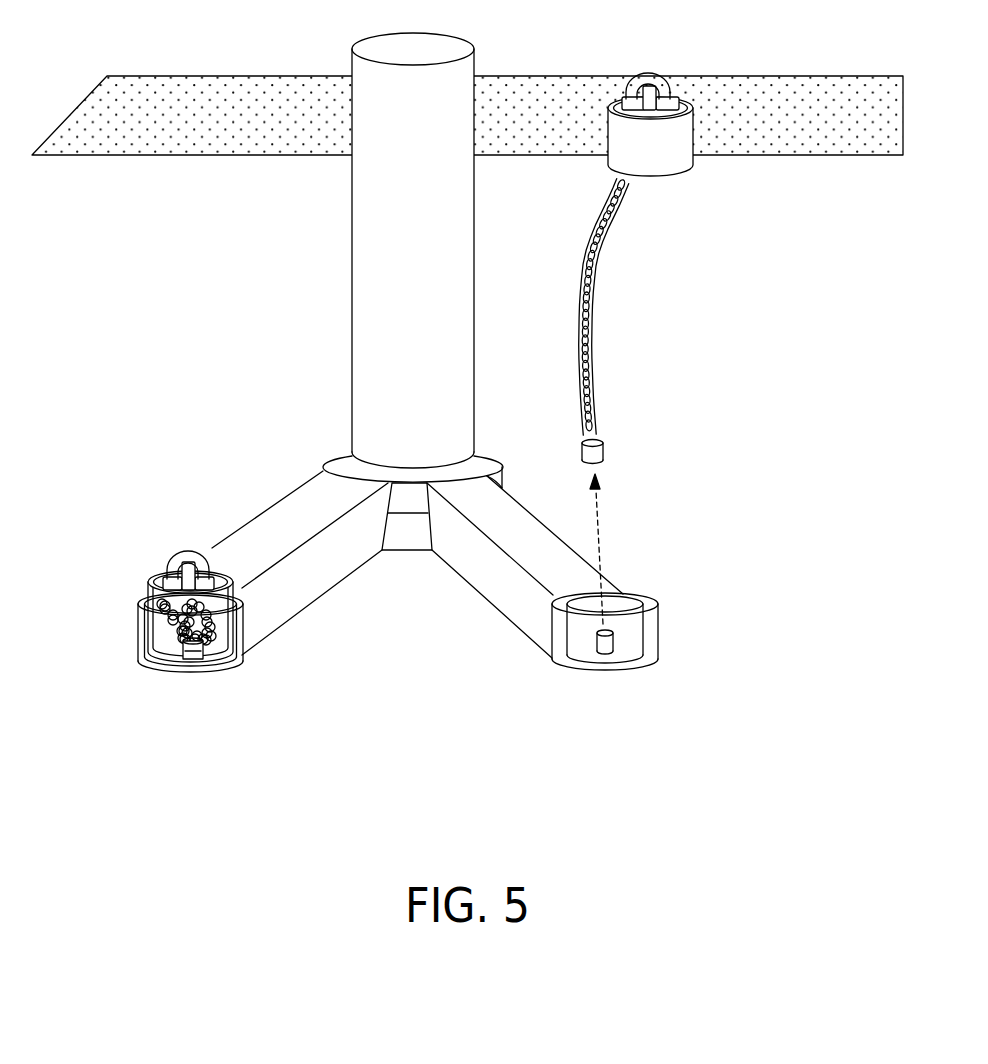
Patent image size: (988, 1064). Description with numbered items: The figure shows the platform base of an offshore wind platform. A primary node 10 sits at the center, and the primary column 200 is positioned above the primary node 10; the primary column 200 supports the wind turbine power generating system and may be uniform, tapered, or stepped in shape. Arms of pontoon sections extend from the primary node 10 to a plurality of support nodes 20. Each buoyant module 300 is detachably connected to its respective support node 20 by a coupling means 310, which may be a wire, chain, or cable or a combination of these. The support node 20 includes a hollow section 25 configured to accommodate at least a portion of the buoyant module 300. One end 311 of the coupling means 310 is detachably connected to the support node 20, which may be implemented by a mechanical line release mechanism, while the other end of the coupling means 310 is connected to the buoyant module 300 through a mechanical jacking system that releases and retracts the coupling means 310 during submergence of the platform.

The primary node 10 is at (490, 455).
The support node 20 is at (462, 577).
The hollow section 25 is at (623, 643).
The primary column 200 is at (350, 213).
The buoyant module 300 is at (690, 147).
The coupling means 310 is at (594, 313).
The one end of the coupling means 311 is at (604, 452).